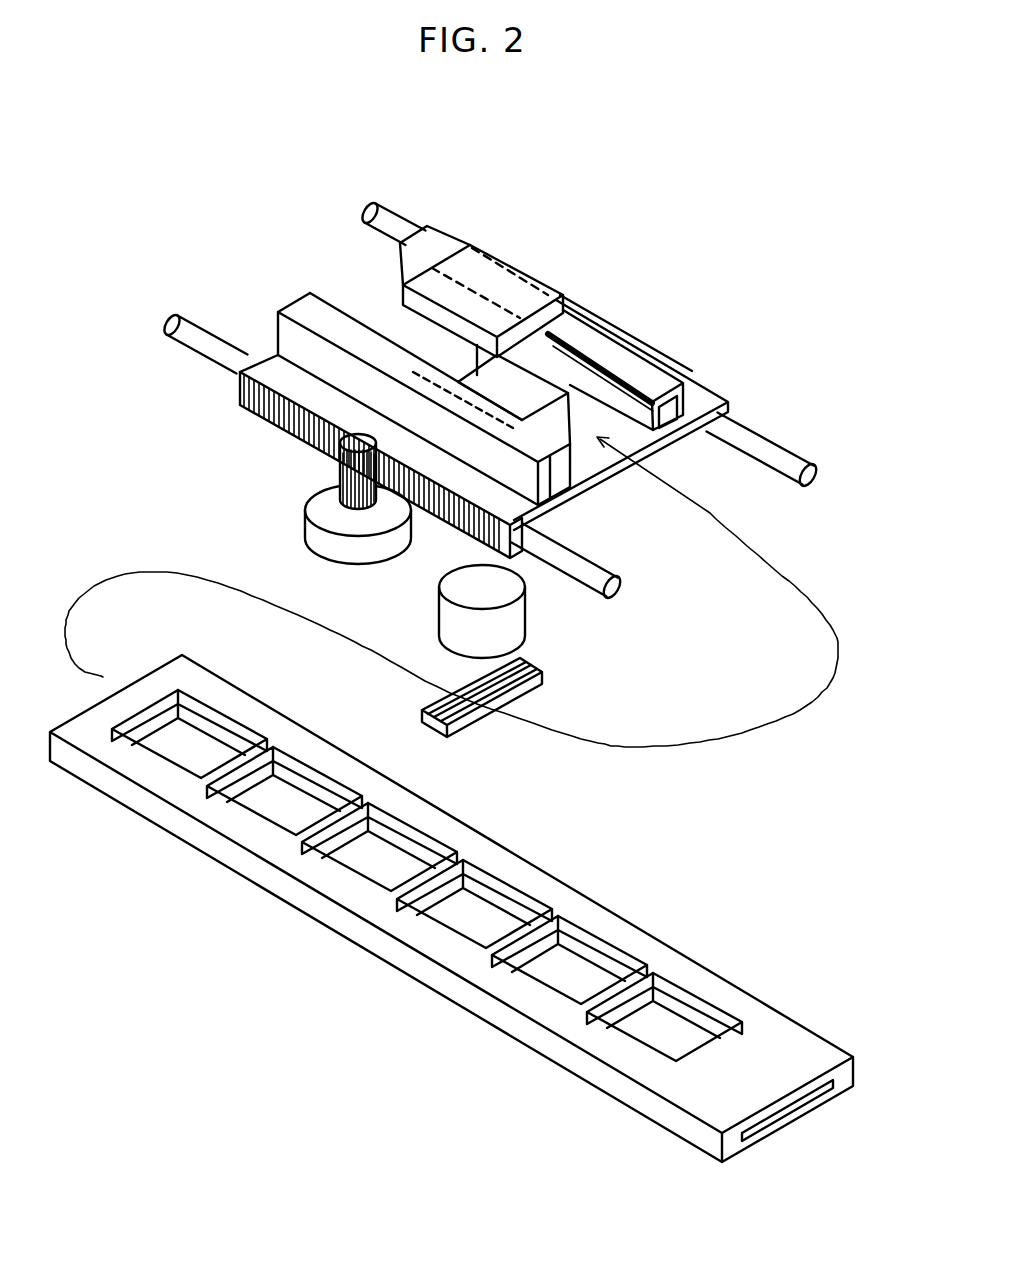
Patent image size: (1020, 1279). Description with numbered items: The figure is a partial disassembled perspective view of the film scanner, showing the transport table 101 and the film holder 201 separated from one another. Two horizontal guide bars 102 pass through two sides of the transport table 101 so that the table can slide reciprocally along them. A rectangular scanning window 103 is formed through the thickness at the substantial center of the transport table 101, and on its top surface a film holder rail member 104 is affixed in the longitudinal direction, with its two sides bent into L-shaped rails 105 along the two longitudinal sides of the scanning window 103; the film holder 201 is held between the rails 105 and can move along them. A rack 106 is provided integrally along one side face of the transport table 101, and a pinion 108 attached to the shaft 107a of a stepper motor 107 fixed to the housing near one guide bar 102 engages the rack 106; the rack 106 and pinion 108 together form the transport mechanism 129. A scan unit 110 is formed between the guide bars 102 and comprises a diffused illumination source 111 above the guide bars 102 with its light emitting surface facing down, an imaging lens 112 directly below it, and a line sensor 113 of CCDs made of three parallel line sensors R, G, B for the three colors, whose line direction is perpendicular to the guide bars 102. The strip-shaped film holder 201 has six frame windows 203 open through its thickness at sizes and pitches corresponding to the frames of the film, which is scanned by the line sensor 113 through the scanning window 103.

The transport table 101 is at (697, 393).
The guide bars 102 is at (812, 483).
The scanning window 103 is at (533, 393).
The film holder rail member 104 is at (577, 467).
The rails 105 is at (645, 372).
The rack 106 is at (267, 413).
The stepper motor 107 is at (313, 537).
The shaft 107a is at (349, 510).
The pinion 108 is at (342, 467).
The scan unit 110 is at (590, 303).
The diffused illumination source 111 is at (517, 290).
The imaging lens 112 is at (437, 617).
The line sensor 113 is at (510, 700).
The red line sensor R is at (527, 657).
The green line sensor G is at (542, 662).
The blue line sensor B is at (542, 672).
The transport mechanism 129 is at (209, 495).
The film holder 201 is at (573, 882).
The frame windows 203 is at (357, 866).